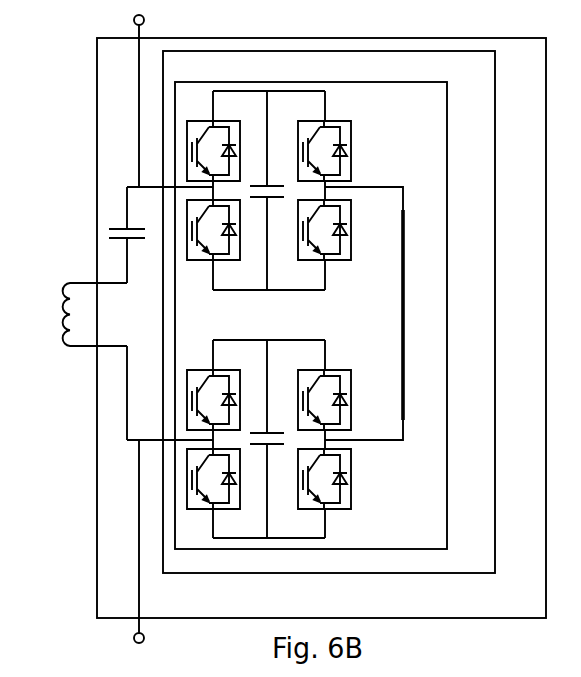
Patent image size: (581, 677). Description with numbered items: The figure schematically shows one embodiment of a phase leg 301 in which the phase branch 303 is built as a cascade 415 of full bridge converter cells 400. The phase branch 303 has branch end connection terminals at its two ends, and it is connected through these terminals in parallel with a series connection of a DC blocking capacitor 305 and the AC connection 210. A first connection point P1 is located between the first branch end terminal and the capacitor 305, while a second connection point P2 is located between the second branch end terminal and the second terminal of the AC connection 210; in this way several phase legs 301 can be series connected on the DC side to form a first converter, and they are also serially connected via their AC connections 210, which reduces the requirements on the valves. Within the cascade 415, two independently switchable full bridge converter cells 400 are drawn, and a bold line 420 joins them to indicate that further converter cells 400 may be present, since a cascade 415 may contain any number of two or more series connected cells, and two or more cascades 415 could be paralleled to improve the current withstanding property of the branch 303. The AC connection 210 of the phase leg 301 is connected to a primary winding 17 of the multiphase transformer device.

The phase leg 301 is at (321, 328).
The phase branch 303 is at (329, 312).
The cascade 415 is at (311, 315).
The converter cell 400 is at (273, 86).
The bold line 420 is at (405, 290).
The first connection point P1 is at (139, 186).
The second connection point P2 is at (138, 441).
The DC blocking capacitor 305 is at (120, 223).
The primary winding 17 is at (67, 283).
The AC connection 210 is at (124, 372).